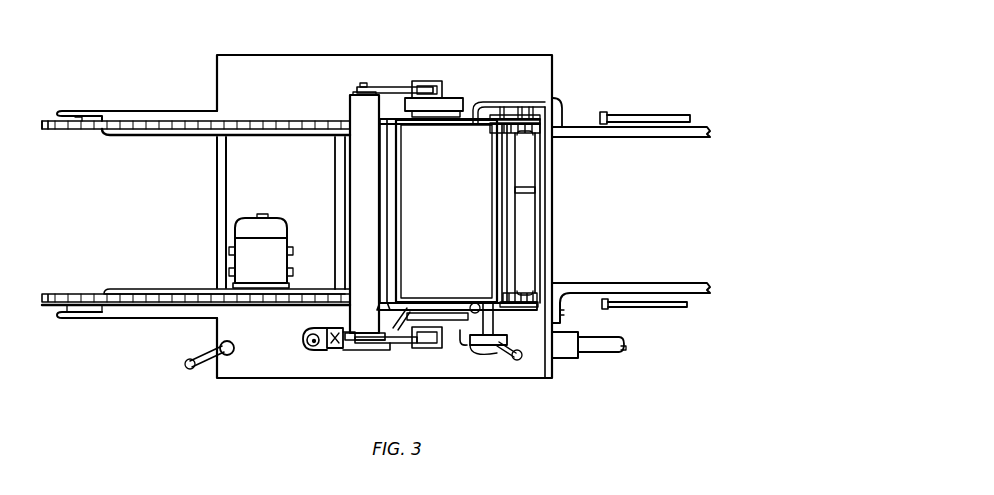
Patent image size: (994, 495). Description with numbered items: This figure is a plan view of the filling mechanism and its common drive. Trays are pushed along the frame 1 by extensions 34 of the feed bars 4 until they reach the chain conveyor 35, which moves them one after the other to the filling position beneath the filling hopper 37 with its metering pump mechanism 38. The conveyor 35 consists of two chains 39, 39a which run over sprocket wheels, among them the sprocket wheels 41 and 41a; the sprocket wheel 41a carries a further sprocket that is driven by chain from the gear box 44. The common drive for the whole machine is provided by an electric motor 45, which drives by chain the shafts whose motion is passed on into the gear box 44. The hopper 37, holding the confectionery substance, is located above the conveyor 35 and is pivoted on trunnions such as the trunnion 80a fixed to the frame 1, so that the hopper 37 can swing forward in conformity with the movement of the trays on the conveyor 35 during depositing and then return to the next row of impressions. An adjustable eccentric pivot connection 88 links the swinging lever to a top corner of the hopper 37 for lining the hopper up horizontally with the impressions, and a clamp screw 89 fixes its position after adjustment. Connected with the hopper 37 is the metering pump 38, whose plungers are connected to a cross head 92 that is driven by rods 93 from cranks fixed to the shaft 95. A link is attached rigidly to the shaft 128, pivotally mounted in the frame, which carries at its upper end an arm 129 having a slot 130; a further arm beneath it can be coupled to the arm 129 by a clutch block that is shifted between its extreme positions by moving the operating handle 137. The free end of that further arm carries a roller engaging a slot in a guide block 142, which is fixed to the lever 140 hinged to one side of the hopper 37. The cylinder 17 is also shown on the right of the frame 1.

The frame 1 is at (278, 55).
The feed bars 4 is at (672, 115).
The cylinder 17 is at (608, 349).
The extensions 34 is at (585, 127).
The chain conveyor 35 is at (272, 120).
The filling hopper 37 is at (458, 125).
The metering pump mechanism 38 is at (348, 125).
The chain 39 is at (58, 293).
The chain 39a is at (66, 133).
The sprocket wheel 41 is at (525, 294).
The sprocket wheel 41a is at (523, 132).
The gear box 44 is at (538, 178).
The electric motor 45 is at (270, 227).
The trunnion 80a is at (443, 105).
The adjustable eccentric pivot connection 88 is at (515, 361).
The clamp screw 89 is at (462, 336).
The cross head 92 is at (356, 212).
The rods 93 is at (392, 87).
The shaft 95 is at (338, 227).
The shaft 128 is at (302, 340).
The arm 129 is at (313, 350).
The slot 130 is at (336, 348).
The operating handle 137 is at (192, 369).
The lever 140 is at (398, 323).
The guide block 142 is at (358, 351).